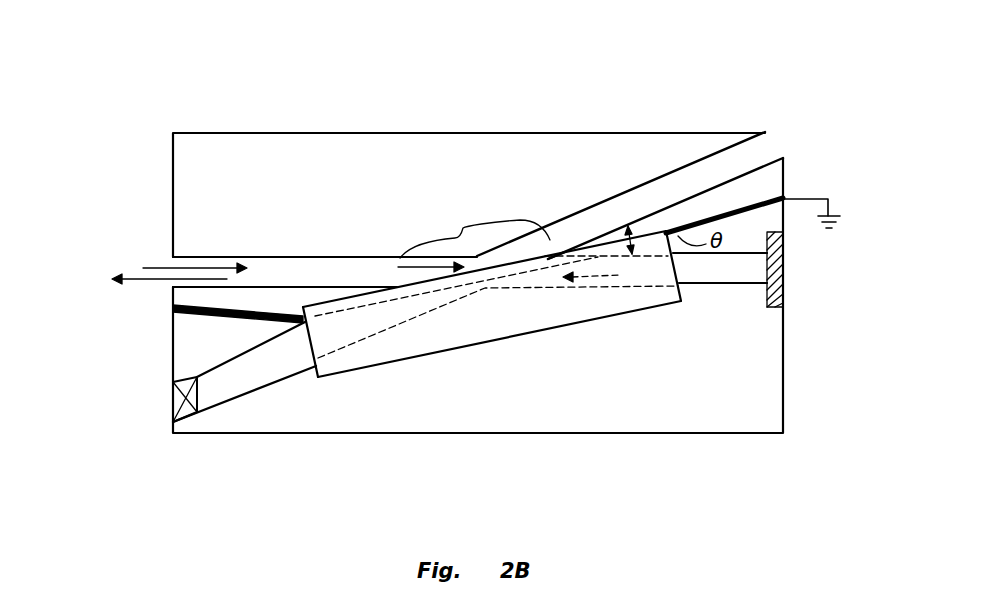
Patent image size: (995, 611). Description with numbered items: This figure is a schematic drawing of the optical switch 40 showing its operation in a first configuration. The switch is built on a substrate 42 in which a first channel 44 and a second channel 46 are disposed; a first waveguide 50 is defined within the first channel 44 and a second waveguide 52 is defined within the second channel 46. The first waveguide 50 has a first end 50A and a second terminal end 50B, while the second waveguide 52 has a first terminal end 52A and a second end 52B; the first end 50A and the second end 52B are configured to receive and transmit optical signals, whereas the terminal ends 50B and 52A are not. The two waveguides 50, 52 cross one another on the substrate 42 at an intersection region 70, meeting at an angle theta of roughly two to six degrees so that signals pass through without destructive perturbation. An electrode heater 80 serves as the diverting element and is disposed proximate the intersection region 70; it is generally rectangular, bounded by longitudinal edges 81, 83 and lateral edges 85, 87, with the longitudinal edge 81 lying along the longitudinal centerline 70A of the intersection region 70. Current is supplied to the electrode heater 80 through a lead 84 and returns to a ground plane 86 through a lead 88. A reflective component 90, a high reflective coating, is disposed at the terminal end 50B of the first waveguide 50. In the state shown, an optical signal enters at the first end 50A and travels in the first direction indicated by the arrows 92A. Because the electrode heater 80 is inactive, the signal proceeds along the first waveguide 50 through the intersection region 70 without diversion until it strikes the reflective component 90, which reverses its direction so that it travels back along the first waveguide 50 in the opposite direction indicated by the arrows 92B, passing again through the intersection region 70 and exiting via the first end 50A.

The optical switch 40 is at (124, 149).
The substrate 42 is at (411, 191).
The first channel 44 is at (337, 256).
The second channel 46 is at (609, 198).
The first waveguide 50 is at (292, 256).
The first end 50A is at (172, 284).
The second terminal end 50B is at (788, 269).
The second waveguide 52 is at (648, 181).
The first terminal end 52A is at (172, 403).
The second end 52B is at (766, 143).
The intersection region 70 is at (475, 230).
The longitudinal centerline 70A is at (547, 256).
The electrode heater 80 is at (466, 357).
The longitudinal edge 81 is at (352, 298).
The longitudinal edge 83 is at (543, 330).
The lead 84 is at (197, 316).
The lateral edge 85 is at (686, 299).
The ground plane 86 is at (832, 208).
The lateral edge 87 is at (312, 375).
The lead 88 is at (732, 213).
The reflective component 90 is at (787, 247).
The arrows 92A is at (163, 268).
The arrows 92B is at (128, 277).